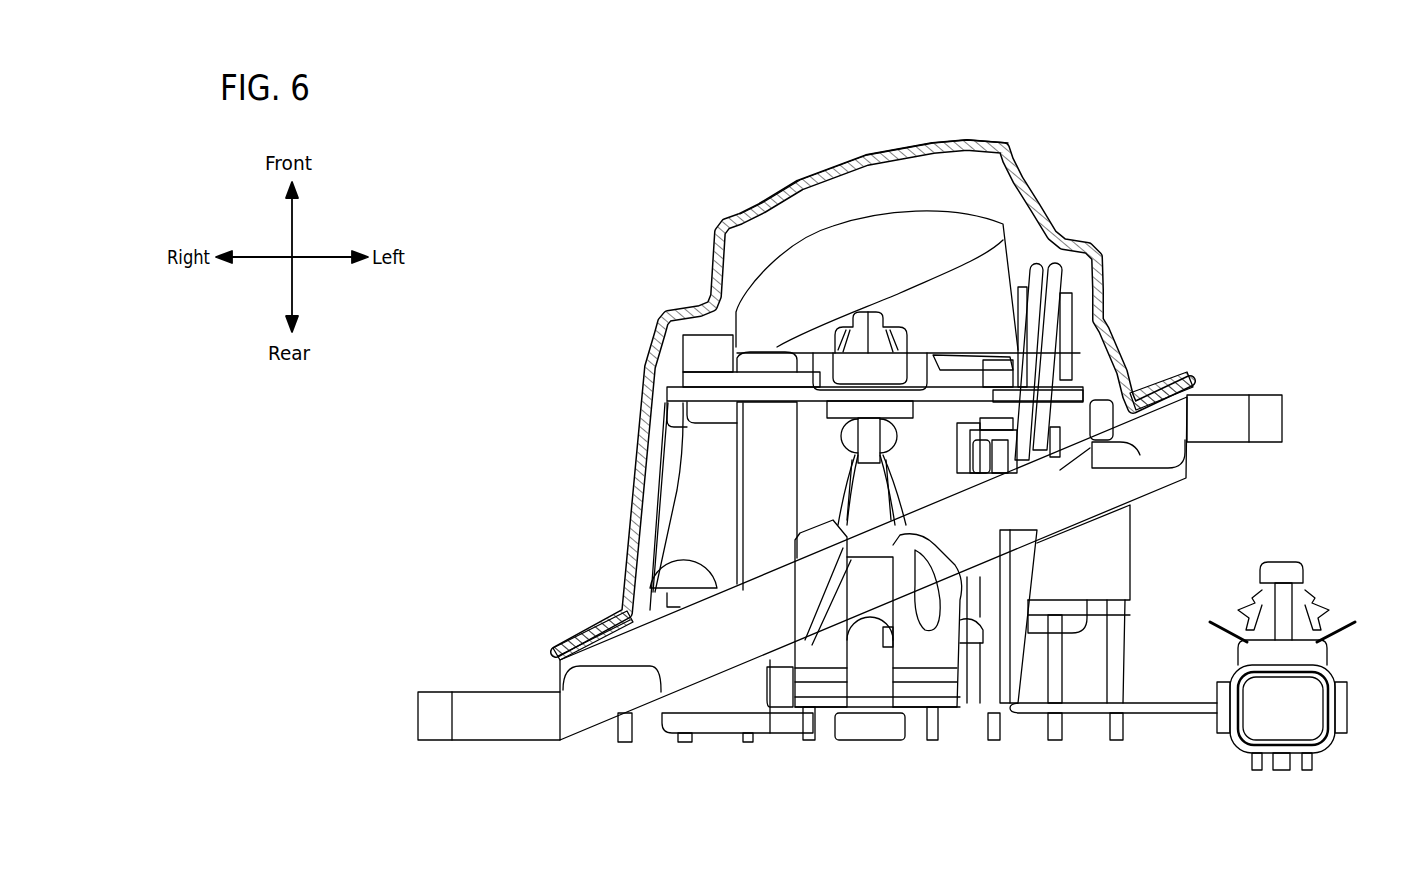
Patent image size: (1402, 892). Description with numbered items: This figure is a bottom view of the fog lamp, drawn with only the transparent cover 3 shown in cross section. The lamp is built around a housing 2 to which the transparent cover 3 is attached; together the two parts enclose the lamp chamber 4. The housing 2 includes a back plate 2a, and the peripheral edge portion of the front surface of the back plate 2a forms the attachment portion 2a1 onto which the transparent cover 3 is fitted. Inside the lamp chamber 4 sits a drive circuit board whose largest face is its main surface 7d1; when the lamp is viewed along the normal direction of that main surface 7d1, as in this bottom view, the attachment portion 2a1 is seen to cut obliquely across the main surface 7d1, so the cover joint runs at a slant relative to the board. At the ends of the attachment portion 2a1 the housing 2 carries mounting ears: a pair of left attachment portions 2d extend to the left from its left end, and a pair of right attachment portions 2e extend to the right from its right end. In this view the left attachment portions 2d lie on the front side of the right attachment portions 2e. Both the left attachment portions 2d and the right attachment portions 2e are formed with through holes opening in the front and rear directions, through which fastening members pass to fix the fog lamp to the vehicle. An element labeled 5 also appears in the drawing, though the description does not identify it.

The housing 2 is at (654, 757).
The back plate 2a is at (712, 663).
The attachment portion 2a1 is at (713, 578).
The left attachment portions 2d is at (1265, 400).
The right attachment portions 2e is at (467, 692).
The transparent cover 3 is at (1041, 190).
The lamp chamber 4 is at (970, 178).
The dome member 5 is at (835, 238).
The main surface 7d1 is at (807, 462).